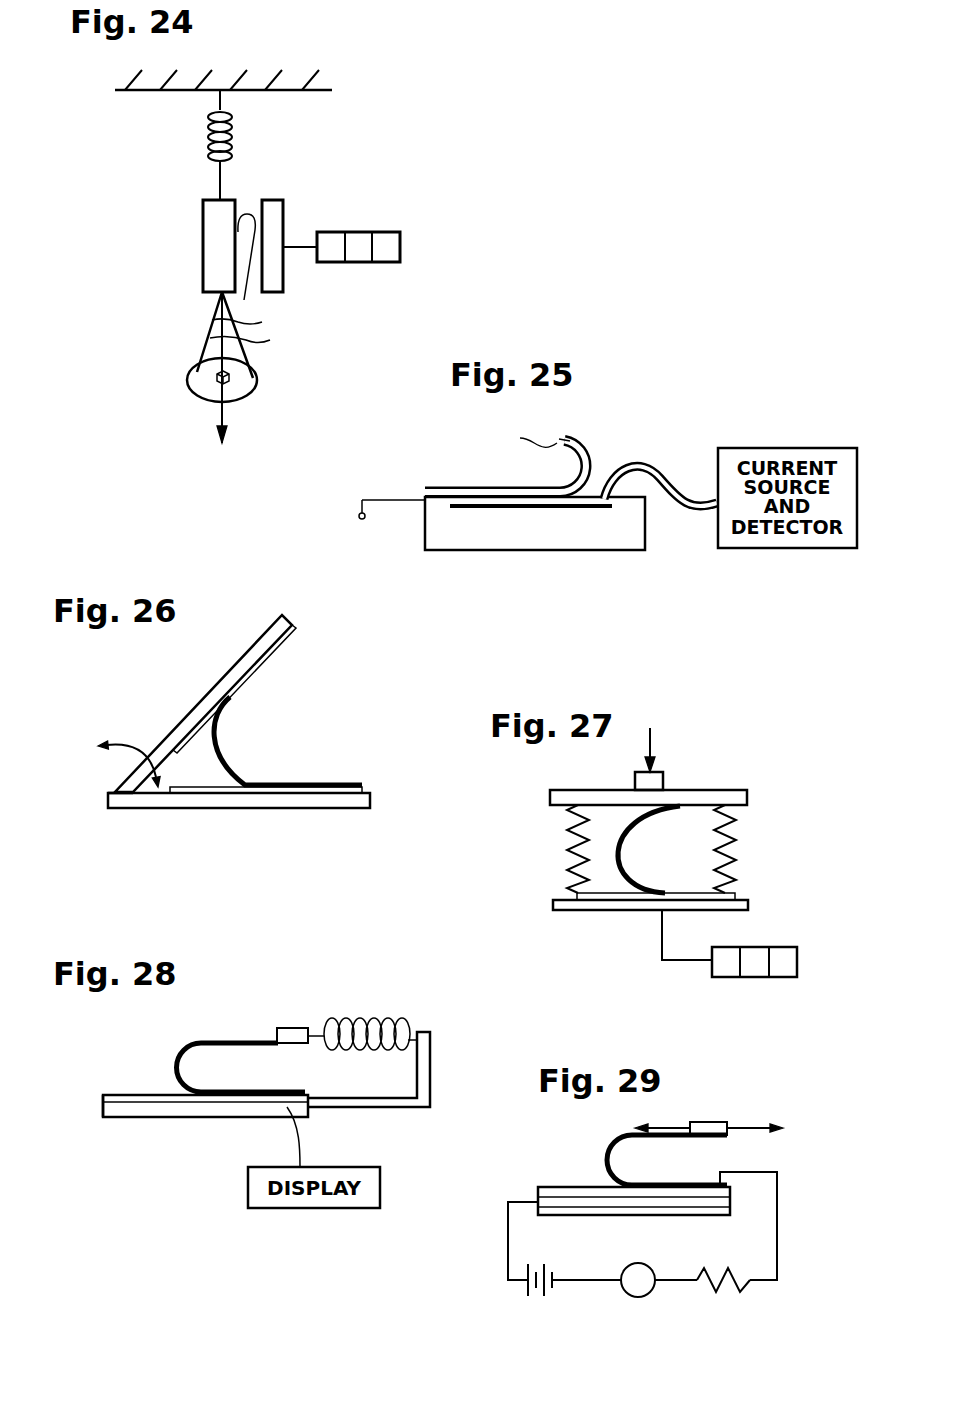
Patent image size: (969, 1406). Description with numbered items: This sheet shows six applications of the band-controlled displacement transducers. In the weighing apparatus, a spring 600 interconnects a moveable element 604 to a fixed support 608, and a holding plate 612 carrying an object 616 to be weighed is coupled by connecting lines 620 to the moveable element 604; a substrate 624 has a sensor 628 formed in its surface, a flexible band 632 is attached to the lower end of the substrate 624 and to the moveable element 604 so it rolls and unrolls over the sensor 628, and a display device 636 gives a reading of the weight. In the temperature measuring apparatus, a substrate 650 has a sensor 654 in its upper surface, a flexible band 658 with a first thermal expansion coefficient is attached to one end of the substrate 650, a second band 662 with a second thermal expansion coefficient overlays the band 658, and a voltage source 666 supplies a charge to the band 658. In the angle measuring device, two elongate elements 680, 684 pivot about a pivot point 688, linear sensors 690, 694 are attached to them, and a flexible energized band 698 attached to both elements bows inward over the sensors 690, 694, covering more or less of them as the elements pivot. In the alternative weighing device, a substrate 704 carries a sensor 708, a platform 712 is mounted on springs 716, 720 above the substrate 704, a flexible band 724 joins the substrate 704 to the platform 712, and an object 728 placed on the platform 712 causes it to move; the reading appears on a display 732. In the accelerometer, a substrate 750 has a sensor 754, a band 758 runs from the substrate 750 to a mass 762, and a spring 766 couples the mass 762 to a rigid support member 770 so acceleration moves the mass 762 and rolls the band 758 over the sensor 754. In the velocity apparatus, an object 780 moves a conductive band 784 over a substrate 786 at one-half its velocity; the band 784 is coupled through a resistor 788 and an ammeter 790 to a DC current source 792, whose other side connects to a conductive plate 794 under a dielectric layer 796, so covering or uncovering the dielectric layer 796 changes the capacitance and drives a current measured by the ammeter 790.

In FIG. 24, the spring 600 is at (235, 128).
In FIG. 24, the moveable element 604 is at (203, 230).
In FIG. 24, the fixed support 608 is at (130, 92).
In FIG. 24, the holding plate 612 is at (254, 385).
In FIG. 24, the object 616 is at (187, 380).
In FIG. 24, the connecting lines 620 is at (248, 345).
In FIG. 24, the substrate 624 is at (287, 213).
In FIG. 24, the sensor 628 is at (243, 212).
In FIG. 24, the flexible band 632 is at (244, 300).
In FIG. 24, the display device 636 is at (360, 232).
In FIG. 25, the substrate 650 is at (483, 530).
In FIG. 25, the sensor 654 is at (572, 510).
In FIG. 25, the flexible band 658 is at (578, 448).
In FIG. 25, the second band 662 is at (517, 438).
In FIG. 25, the voltage source 666 is at (360, 495).
In FIG. 26, the elongate element 680 is at (177, 732).
In FIG. 26, the elongate element 684 is at (275, 800).
In FIG. 26, the pivot point 688 is at (118, 798).
In FIG. 26, the linear sensor 690 is at (212, 697).
In FIG. 26, the linear sensor 694 is at (183, 790).
In FIG. 26, the flexible band 698 is at (223, 753).
In FIG. 27, the substrate 704 is at (740, 912).
In FIG. 27, the sensor 708 is at (607, 900).
In FIG. 27, the platform 712 is at (733, 790).
In FIG. 27, the spring 716 is at (740, 848).
In FIG. 27, the spring 720 is at (568, 855).
In FIG. 27, the flexible band 724 is at (622, 855).
In FIG. 27, the object 728 is at (663, 780).
In FIG. 27, the display 732 is at (758, 977).
In FIG. 28, the substrate 750 is at (210, 1110).
In FIG. 28, the sensor 754 is at (118, 1095).
In FIG. 28, the band 758 is at (190, 1043).
In FIG. 28, the mass 762 is at (292, 1028).
In FIG. 28, the spring 766 is at (370, 1020).
In FIG. 28, the rigid support member 770 is at (432, 1075).
In FIG. 29, the object 780 is at (713, 1122).
In FIG. 29, the band 784 is at (610, 1152).
In FIG. 29, the substrate 786 is at (627, 1207).
In FIG. 29, the resistor 788 is at (727, 1290).
In FIG. 29, the ammeter 790 is at (627, 1298).
In FIG. 29, the DC current source 792 is at (533, 1300).
In FIG. 29, the conductive plate 794 is at (538, 1197).
In FIG. 29, the dielectric layer 796 is at (555, 1187).